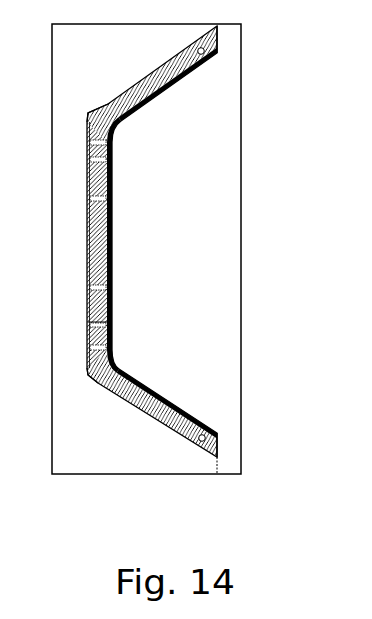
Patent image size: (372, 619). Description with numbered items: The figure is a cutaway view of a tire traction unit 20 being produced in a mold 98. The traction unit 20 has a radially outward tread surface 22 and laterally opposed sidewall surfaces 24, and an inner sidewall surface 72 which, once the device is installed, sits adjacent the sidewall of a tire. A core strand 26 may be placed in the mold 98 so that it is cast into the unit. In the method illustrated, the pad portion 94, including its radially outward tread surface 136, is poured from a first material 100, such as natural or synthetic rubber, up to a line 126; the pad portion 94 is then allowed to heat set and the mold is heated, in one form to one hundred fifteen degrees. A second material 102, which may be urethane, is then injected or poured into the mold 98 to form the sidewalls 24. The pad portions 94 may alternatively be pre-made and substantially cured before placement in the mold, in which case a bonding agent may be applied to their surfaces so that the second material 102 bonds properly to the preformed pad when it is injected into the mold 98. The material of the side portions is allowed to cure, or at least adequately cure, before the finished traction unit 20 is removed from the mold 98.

The tire traction unit 20 is at (93, 396).
The radially outward tread surface 22 is at (87, 193).
The sidewall surfaces 24 is at (136, 79).
The core strand 26 is at (210, 60).
The inner sidewall surface 72 is at (172, 85).
The pad portion 94 is at (113, 244).
The mold 98 is at (241, 265).
The first material 100 is at (112, 320).
The second material 102 is at (143, 104).
The line 126 is at (106, 102).
The radially outward (tread) surface 136 is at (85, 231).